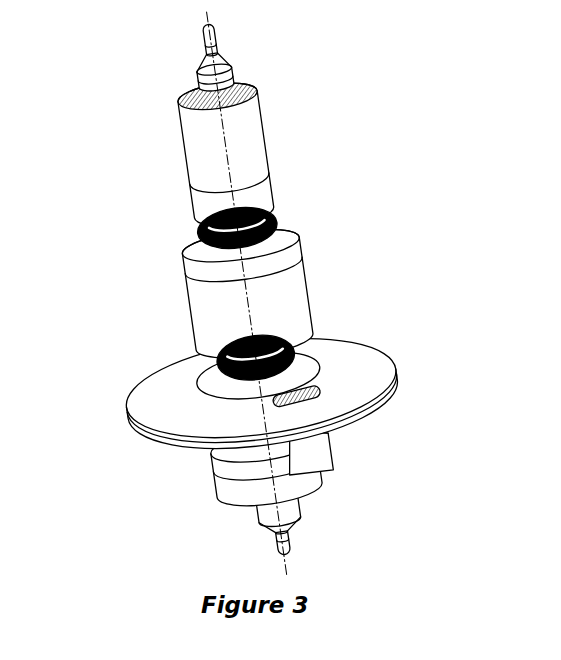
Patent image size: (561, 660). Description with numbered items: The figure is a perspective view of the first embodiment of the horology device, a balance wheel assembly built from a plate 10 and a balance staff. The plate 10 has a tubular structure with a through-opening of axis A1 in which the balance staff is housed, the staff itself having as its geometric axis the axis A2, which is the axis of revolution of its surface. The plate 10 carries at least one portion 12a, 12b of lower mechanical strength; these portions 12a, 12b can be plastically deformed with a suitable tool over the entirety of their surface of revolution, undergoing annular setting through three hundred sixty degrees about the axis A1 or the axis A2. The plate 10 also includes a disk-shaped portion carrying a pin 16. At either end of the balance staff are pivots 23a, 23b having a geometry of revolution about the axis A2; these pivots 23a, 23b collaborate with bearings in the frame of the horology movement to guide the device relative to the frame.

The plate 10 is at (293, 287).
The plastically deformable portion 12a is at (203, 237).
The plastically deformable portion 12b is at (217, 364).
The pin 16 is at (320, 450).
The pivot 23a is at (278, 546).
The pivot 23b is at (205, 45).
The axis of the through-opening A1 is at (169, 154).
The axis of the balance staff A2 is at (227, 142).